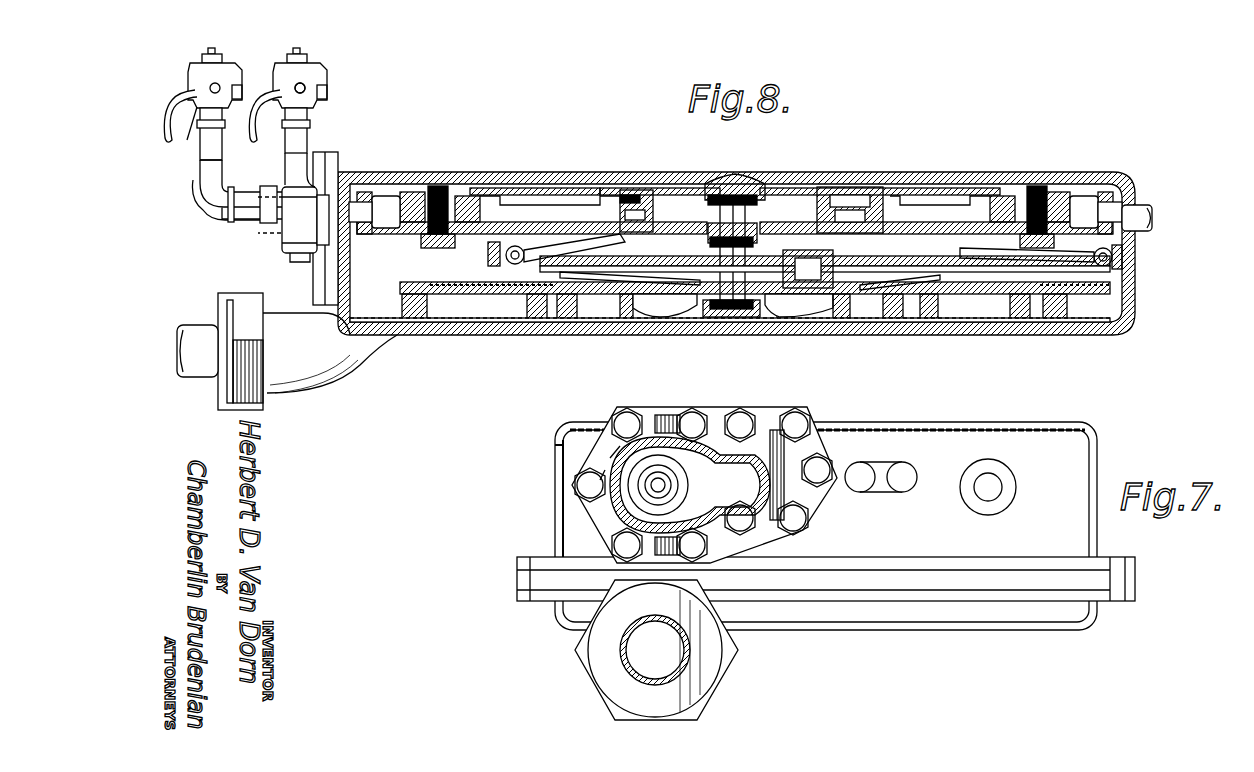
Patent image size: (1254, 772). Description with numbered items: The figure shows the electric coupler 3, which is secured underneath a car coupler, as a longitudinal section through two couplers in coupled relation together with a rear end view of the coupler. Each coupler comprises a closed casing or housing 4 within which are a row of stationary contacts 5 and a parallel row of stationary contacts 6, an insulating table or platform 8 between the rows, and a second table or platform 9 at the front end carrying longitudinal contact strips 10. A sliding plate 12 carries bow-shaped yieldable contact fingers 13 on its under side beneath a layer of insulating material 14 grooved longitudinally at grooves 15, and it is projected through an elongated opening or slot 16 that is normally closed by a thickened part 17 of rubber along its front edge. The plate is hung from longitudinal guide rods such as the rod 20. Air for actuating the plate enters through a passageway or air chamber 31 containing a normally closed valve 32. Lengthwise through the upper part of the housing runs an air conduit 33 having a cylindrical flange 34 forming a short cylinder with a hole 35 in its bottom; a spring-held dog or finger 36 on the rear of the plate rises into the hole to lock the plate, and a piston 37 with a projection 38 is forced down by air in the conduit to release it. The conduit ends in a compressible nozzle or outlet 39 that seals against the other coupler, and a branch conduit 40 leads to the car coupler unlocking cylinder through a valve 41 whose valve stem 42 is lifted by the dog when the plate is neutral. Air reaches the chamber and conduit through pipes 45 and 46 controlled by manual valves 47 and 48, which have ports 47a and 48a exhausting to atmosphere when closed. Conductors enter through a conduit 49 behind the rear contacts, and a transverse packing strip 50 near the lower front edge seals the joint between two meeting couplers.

In FIG. 8, the electric coupler 3 is at (377, 160).
In FIG. 7, the electric coupler 3 is at (1112, 445).
In FIG. 8, the casing or housing 4 is at (405, 172).
In FIG. 7, the casing or housing 4 is at (902, 425).
In FIG. 8, the stationary contacts 5 is at (402, 286).
In FIG. 8, the stationary contacts 6 is at (550, 307).
In FIG. 8, the table or platform 8 is at (463, 340).
In FIG. 8, the second table or platform 9 is at (667, 300).
In FIG. 8, the contact strips 10 is at (635, 300).
In FIG. 8, the sliding plate 12 is at (703, 263).
In FIG. 8, the contact fingers 13 is at (603, 277).
In FIG. 8, the layer of insulating material 14 is at (657, 267).
In FIG. 8, the grooves 15 is at (1153, 277).
In FIG. 8, the elongated opening or slot 16 is at (713, 317).
In FIG. 8, the thickened part 17 is at (810, 245).
In FIG. 7, the rod 20 is at (992, 478).
In FIG. 7, the passageway or air chamber 31 is at (717, 467).
In FIG. 7, the valve 32 is at (633, 497).
In FIG. 8, the air conduit 33 is at (497, 205).
In FIG. 7, the air conduit 33 is at (860, 477).
In FIG. 8, the cylindrical flange 34 is at (577, 202).
In FIG. 8, the hole 35 is at (750, 260).
In FIG. 8, the spring-held dog or finger 36 is at (548, 250).
In FIG. 8, the piston 37 is at (623, 217).
In FIG. 8, the projection 38 is at (630, 202).
In FIG. 8, the compressible nozzle or outlet 39 is at (735, 192).
In FIG. 8, the branch conduit 40 is at (380, 203).
In FIG. 7, the branch conduit 40 is at (902, 477).
In FIG. 8, the valve 41 is at (445, 200).
In FIG. 8, the valve stem 42 is at (443, 240).
In FIG. 8, the pipe 45 is at (217, 215).
In FIG. 8, the pipe 46 is at (307, 131).
In FIG. 8, the manual controlling valve 47 is at (230, 84).
In FIG. 8, the port 47a is at (180, 135).
In FIG. 8, the manual controlling valve 48 is at (310, 88).
In FIG. 8, the port 48a is at (305, 92).
In FIG. 8, the conduit 49 is at (313, 390).
In FIG. 7, the conduit 49 is at (643, 665).
In FIG. 8, the packing strip 50 is at (733, 303).